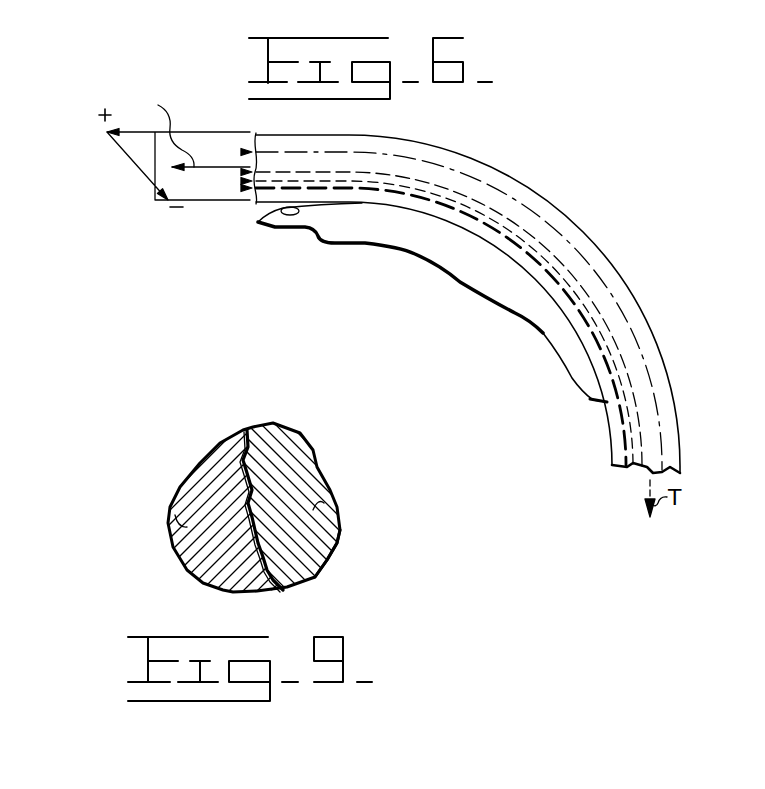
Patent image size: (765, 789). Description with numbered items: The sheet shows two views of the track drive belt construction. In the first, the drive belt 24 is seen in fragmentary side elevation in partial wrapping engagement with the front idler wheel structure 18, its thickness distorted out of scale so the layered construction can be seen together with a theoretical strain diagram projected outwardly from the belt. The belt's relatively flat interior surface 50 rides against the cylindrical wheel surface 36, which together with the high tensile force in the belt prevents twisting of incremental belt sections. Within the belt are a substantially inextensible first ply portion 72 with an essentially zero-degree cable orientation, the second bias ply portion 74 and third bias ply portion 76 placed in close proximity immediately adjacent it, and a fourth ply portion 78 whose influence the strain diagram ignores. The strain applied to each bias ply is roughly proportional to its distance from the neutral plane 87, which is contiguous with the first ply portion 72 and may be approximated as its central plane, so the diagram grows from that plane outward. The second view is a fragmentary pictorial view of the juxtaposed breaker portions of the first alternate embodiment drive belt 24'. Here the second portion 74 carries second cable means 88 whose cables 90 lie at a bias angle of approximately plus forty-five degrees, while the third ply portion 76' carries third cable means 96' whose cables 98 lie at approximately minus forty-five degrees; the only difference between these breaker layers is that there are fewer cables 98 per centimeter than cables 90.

In FIG. 6, the drive belt 24 is at (467, 303).
In FIG. 6, the interior surface 50 is at (610, 432).
In FIG. 6, the fourth ply portion 78 is at (242, 152).
In FIG. 6, the third bias ply portion 76 is at (414, 320).
In FIG. 6, the second bias ply portion 74 is at (242, 181).
In FIG. 9, the second bias ply portion 74 is at (202, 595).
In FIG. 6, the first ply portion 72 is at (242, 188).
In FIG. 6, the neutral plane 87 is at (155, 190).
In FIG. 6, the cylindrical wheel surface 36 is at (298, 214).
In FIG. 6, the front idler wheel structure 18 is at (261, 230).
In FIG. 9, the first alternate embodiment drive belt 24' is at (277, 494).
In FIG. 9, the second cable means 88 is at (191, 481).
In FIG. 9, the third cable means 96' is at (286, 505).
In FIG. 9, the cables 90 is at (170, 530).
In FIG. 9, the cables 98 is at (340, 524).
In FIG. 9, the third ply portion 76' is at (370, 579).